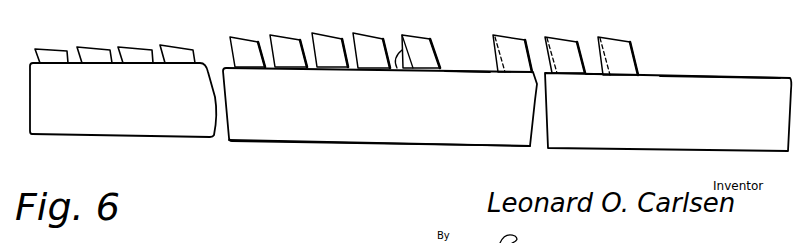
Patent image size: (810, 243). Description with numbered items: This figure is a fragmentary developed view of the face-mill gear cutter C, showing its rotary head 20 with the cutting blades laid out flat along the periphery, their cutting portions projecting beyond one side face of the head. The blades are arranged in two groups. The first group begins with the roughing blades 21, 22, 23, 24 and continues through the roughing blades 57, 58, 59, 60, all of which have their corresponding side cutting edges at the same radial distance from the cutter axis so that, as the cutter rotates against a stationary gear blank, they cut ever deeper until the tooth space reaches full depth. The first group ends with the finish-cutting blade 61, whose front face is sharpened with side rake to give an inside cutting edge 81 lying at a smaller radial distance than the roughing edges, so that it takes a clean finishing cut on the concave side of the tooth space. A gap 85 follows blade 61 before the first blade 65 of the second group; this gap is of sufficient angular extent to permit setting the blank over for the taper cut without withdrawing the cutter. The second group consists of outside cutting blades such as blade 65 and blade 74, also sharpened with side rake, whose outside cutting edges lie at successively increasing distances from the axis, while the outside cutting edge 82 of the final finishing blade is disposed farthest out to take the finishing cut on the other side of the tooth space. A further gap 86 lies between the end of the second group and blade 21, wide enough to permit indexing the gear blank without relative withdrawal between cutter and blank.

The rotary head 20 is at (385, 128).
The cutting blade 21 is at (50, 53).
The cutting blade 22 is at (90, 52).
The cutting blade 23 is at (132, 52).
The cutting blade 24 is at (173, 50).
The cutting blade 57 is at (240, 45).
The cutting blade 58 is at (277, 45).
The cutting blade 59 is at (323, 43).
The cutting blade 60 is at (367, 43).
The finish-cutting blade 61 is at (413, 42).
The outside cutting blade 65 is at (512, 47).
The outside cutting blade 74 is at (558, 48).
The inside cutting edge 81 is at (395, 70).
The outside cutting edge 82 is at (597, 53).
The gap 85 is at (460, 55).
The gap 86 is at (705, 62).
The gear cutter C is at (292, 125).